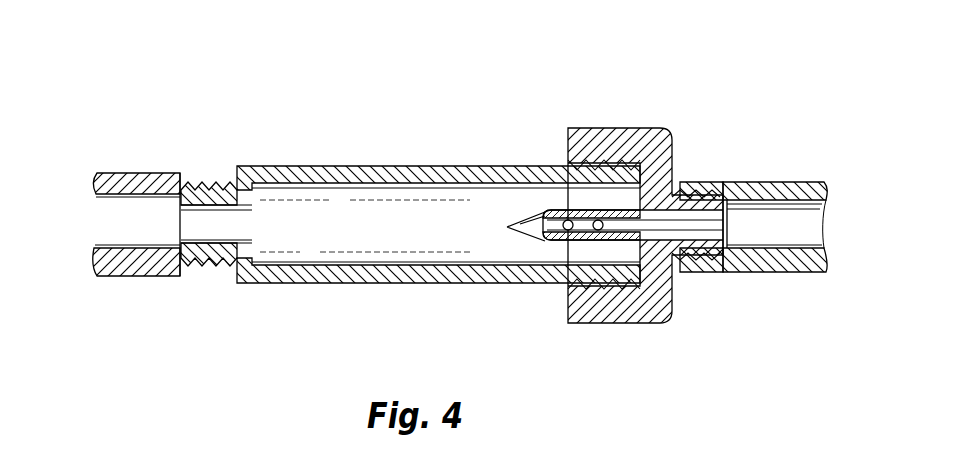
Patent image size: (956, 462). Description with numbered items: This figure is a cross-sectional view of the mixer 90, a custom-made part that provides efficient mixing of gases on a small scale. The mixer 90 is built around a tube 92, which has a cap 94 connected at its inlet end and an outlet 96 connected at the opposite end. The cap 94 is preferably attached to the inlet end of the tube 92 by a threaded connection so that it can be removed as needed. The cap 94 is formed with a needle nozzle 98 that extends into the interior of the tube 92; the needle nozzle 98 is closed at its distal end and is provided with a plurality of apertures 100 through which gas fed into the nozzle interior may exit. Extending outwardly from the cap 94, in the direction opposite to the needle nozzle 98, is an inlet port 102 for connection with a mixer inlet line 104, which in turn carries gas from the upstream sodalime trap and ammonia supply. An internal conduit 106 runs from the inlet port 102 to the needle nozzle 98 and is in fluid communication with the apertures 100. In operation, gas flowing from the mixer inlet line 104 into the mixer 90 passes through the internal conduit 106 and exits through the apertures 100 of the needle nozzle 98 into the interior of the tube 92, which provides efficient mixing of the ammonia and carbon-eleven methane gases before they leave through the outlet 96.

The mixer 90 is at (324, 126).
The tube 92 is at (400, 166).
The cap 94 is at (591, 128).
The outlet 96 is at (207, 255).
The needle nozzle 98 is at (524, 234).
The apertures 100 is at (557, 210).
The inlet port 102 is at (704, 180).
The mixer inlet line 104 is at (800, 182).
The internal conduit 106 is at (722, 231).